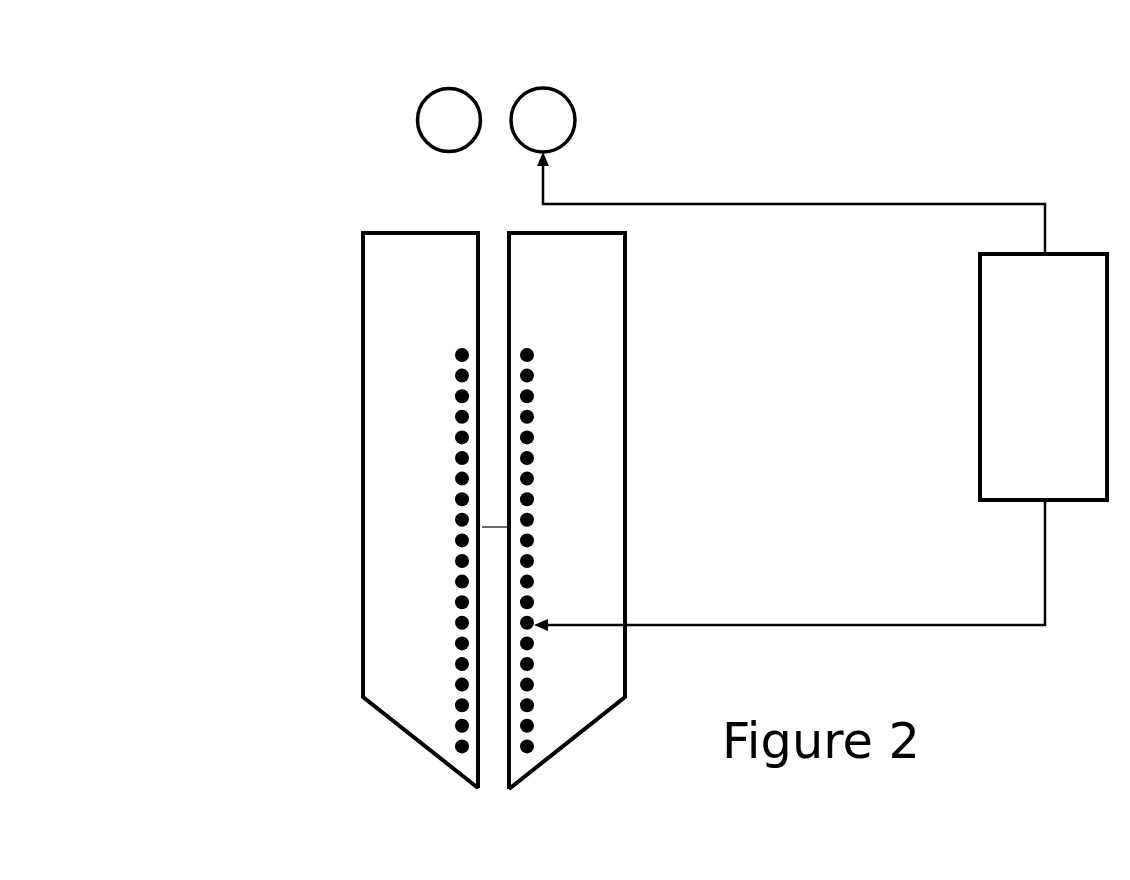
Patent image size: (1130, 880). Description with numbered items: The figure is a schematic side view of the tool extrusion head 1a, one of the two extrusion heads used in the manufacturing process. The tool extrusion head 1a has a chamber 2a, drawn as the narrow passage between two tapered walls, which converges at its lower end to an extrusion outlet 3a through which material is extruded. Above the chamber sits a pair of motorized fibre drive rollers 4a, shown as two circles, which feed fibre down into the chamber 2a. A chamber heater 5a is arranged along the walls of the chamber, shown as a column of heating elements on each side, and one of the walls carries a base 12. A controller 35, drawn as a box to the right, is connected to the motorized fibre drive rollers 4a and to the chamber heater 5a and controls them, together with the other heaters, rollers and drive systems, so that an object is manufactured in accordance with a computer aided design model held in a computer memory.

The tool extrusion head 1a is at (288, 523).
The base 12 is at (383, 254).
The chamber 2a is at (495, 517).
The extrusion outlet 3a is at (494, 777).
The motorized fibre drive rollers 4a is at (460, 88).
The chamber heater 5a is at (460, 499).
The controller 35 is at (1043, 377).